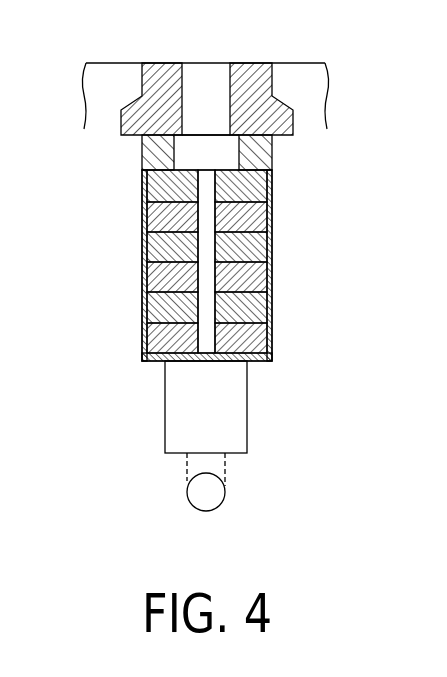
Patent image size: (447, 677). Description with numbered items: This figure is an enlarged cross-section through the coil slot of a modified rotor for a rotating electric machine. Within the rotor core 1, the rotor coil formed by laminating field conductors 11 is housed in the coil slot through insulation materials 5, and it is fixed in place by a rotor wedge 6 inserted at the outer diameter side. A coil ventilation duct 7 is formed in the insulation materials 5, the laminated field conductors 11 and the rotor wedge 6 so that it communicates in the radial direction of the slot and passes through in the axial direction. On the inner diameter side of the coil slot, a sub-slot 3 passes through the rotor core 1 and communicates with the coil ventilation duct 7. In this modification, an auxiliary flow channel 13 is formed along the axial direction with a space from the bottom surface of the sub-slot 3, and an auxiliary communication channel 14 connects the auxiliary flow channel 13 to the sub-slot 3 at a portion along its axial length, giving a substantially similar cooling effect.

The rotor core 1 is at (123, 70).
The rotor wedge 6 is at (247, 68).
The insulation materials 5 is at (272, 150).
The field conductors 11 is at (147, 308).
The coil ventilation duct 7 is at (210, 308).
The sub-slot 3 is at (247, 409).
The auxiliary communication channel 14 is at (225, 463).
The auxiliary flow channel 13 is at (215, 492).